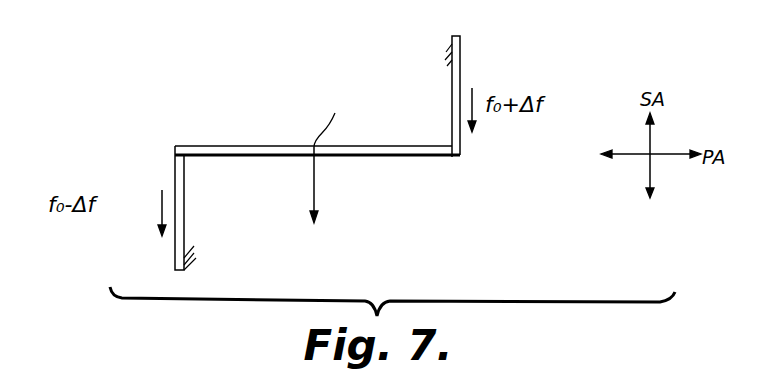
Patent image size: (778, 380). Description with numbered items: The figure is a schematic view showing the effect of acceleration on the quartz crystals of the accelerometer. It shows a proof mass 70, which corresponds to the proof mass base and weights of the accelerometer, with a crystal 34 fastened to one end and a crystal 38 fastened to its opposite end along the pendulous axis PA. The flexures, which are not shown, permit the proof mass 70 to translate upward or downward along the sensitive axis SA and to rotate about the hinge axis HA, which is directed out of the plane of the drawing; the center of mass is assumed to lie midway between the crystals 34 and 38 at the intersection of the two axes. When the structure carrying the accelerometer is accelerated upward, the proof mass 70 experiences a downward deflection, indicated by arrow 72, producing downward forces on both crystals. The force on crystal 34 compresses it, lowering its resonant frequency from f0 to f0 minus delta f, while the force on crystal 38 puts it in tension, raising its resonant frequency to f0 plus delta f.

The crystal 34 is at (185, 217).
The crystal 38 is at (452, 88).
The proof mass 70 is at (245, 138).
The arrow 72 is at (318, 183).